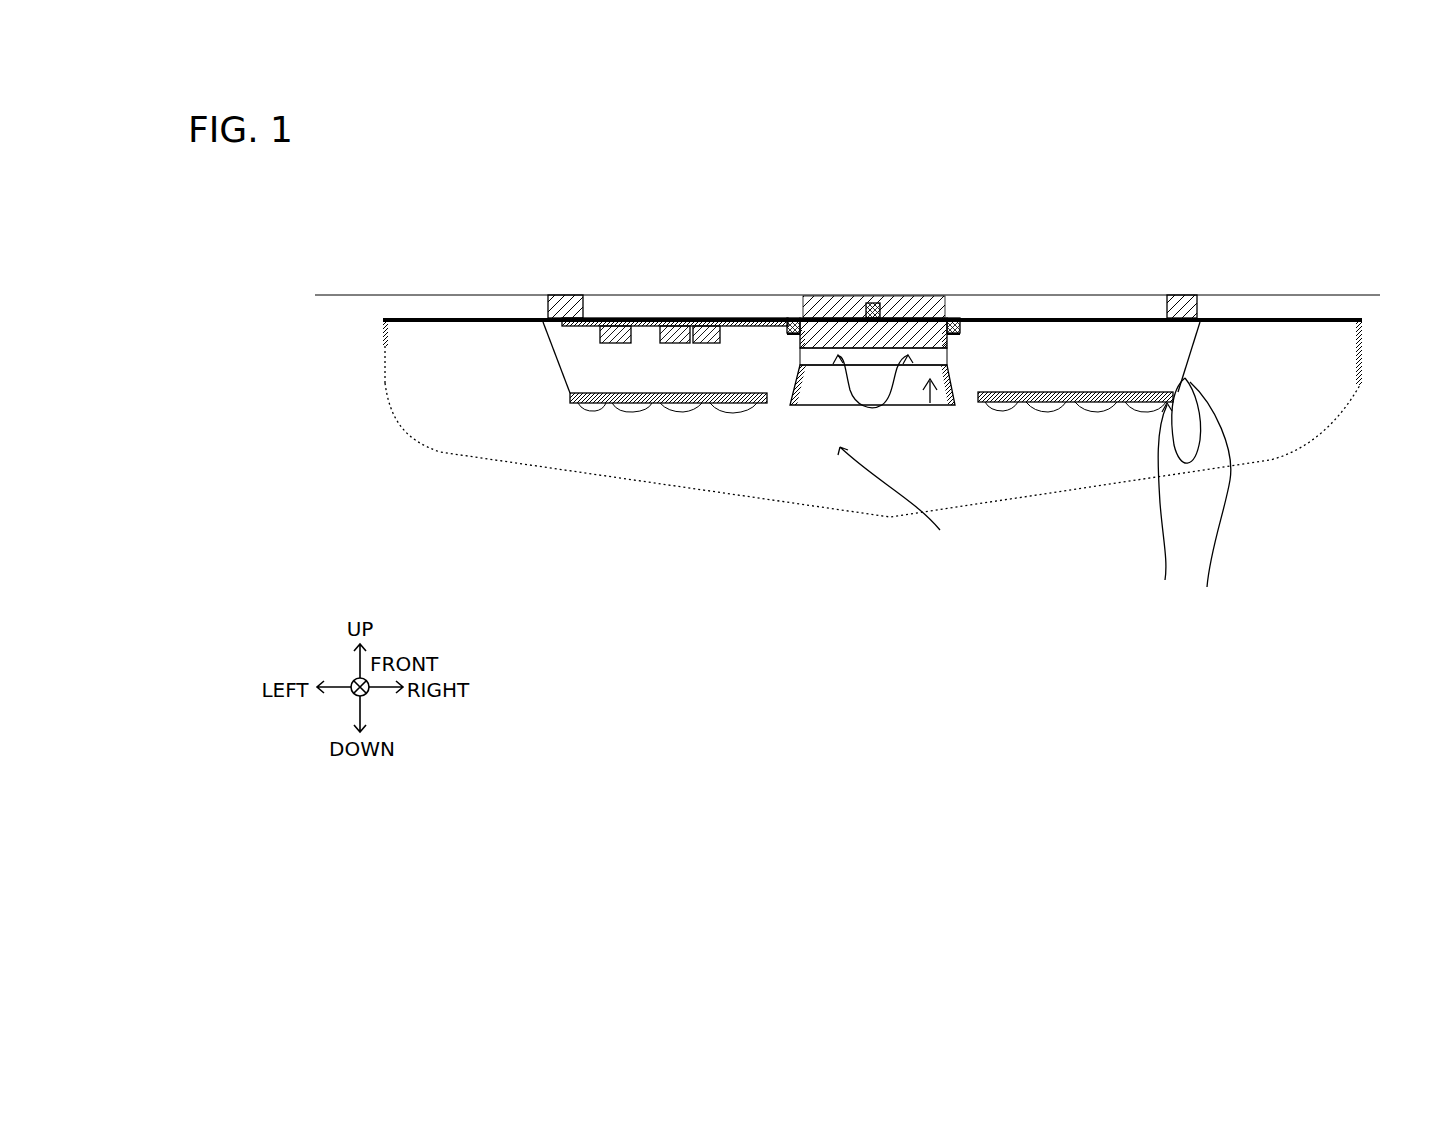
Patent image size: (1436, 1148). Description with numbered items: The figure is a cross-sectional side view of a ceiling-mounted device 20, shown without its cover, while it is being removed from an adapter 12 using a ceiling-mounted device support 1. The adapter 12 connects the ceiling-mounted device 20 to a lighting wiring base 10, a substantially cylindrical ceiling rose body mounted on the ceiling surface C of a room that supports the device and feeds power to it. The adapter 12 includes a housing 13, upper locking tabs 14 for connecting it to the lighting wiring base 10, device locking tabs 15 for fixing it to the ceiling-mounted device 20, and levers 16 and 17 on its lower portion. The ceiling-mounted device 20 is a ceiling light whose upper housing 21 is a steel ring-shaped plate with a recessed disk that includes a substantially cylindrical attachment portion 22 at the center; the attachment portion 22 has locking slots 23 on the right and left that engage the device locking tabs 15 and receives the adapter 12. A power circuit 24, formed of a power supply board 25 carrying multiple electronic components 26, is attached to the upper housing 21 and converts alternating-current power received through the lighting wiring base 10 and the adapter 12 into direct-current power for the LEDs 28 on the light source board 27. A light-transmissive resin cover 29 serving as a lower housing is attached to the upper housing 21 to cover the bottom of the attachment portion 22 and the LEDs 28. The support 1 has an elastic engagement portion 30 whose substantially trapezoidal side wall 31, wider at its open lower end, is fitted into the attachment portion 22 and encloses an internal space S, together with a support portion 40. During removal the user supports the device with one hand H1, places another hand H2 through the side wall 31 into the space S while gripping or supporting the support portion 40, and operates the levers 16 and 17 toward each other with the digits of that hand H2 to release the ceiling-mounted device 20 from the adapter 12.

The ceiling-mounted device support 1 is at (1010, 668).
The lighting wiring base 10 is at (879, 266).
The adapter 12 is at (867, 266).
The housing 13 is at (815, 320).
The upper locking tabs 14 is at (870, 303).
The device locking tabs 15 is at (932, 226).
The lever 16 is at (840, 326).
The lever 17 is at (895, 326).
The ceiling-mounted device 20 is at (1156, 887).
The upper housing 21 is at (641, 323).
The attachment portion 22 is at (797, 358).
The locking slots 23 is at (785, 327).
The power circuit 24 is at (861, 270).
The power supply board 25 is at (590, 321).
The electronic components 26 is at (675, 295).
The light source board 27 is at (675, 404).
The LEDs 28 is at (600, 404).
The cover 29 is at (765, 512).
The engagement portion 30 is at (1027, 626).
The side wall 31 is at (932, 403).
The support portion 40 is at (876, 375).
The ceiling surface C is at (1258, 294).
The one hand H1 is at (1224, 531).
The another hand H2 is at (838, 356).
The internal space S is at (908, 355).